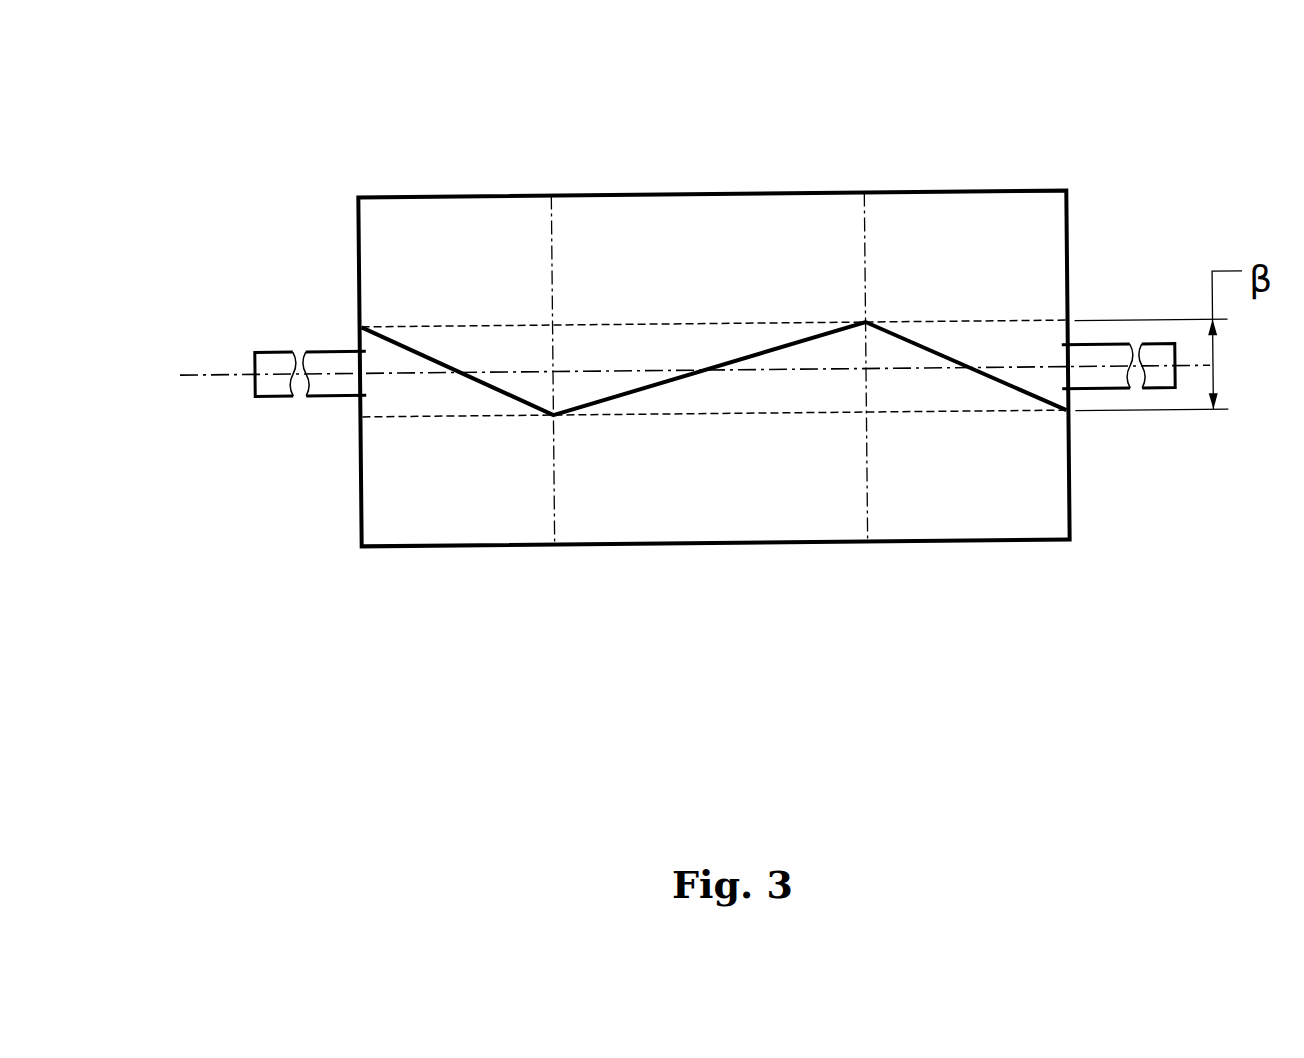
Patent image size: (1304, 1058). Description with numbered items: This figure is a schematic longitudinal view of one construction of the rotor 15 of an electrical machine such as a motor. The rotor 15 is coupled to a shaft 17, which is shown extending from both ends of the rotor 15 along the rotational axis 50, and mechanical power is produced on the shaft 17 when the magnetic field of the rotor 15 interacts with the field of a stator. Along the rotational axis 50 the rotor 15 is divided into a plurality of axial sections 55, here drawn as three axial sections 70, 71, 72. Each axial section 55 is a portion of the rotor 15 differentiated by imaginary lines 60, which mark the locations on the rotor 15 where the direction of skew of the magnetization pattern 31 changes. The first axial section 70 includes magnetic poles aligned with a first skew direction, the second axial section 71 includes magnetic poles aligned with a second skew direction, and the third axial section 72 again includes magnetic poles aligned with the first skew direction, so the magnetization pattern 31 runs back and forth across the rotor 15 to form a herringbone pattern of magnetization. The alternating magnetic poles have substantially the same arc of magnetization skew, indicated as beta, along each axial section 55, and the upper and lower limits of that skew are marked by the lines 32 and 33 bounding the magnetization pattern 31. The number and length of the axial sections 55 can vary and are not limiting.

The rotor 15 is at (1100, 176).
The shaft 17 is at (335, 392).
The magnetization pattern 31 is at (405, 342).
The upper groove limit line 32 is at (989, 324).
The lower groove limit line 33 is at (987, 414).
The rotational axis 50 is at (230, 370).
The axial sections 55 is at (940, 242).
The imaginary lines 60 is at (553, 294).
The first axial section 70 is at (453, 502).
The second axial section 71 is at (713, 500).
The third axial section 72 is at (973, 497).